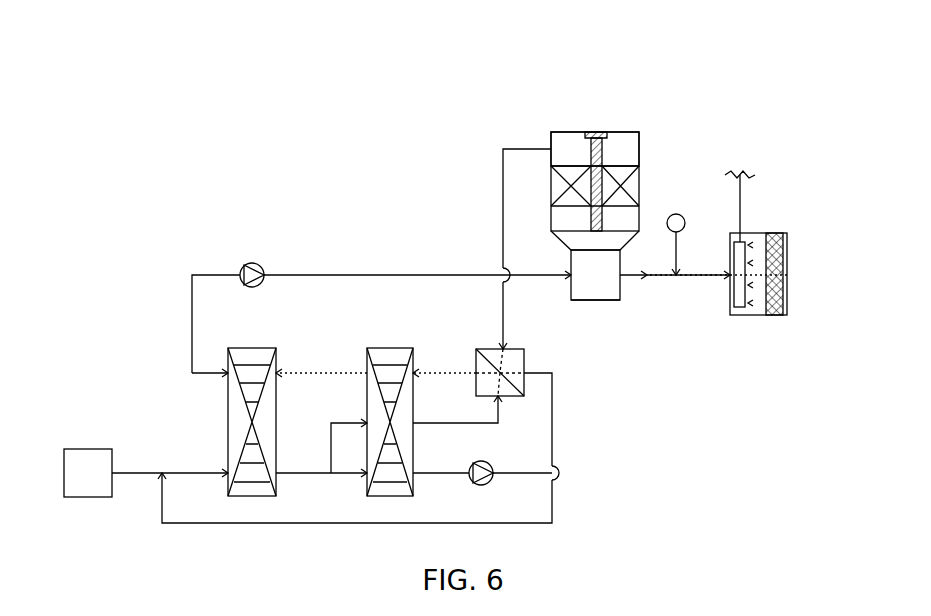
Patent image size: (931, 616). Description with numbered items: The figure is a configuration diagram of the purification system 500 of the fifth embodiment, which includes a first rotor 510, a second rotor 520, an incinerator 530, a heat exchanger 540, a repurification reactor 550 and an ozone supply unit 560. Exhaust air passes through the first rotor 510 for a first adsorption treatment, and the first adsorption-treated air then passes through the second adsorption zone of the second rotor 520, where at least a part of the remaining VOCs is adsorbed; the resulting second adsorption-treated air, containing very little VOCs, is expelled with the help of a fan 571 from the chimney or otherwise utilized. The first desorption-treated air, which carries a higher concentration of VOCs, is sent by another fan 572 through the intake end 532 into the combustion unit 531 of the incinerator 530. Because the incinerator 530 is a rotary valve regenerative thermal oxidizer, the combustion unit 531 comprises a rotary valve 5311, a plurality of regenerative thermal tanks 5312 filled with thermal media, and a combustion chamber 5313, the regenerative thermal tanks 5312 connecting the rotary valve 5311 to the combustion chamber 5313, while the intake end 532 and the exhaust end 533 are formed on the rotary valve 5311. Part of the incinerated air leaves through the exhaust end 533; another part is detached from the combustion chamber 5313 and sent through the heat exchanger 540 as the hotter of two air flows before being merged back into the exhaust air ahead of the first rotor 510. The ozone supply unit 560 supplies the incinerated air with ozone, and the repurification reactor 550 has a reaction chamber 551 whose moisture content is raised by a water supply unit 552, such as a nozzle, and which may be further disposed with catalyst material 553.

The purification system 500 is at (156, 94).
The first rotor 510 is at (276, 393).
The second rotor 520 is at (413, 430).
The incinerator 530 is at (672, 189).
The combustion unit 531 is at (742, 80).
The rotary valve 5311 is at (615, 267).
The regenerative thermal tanks 5312 is at (618, 173).
The combustion chamber 5313 is at (618, 133).
The intake end 532 is at (571, 277).
The exhaust end 533 is at (620, 278).
The heat exchanger 540 is at (490, 350).
The repurification reactor 550 is at (780, 252).
The reaction chamber 551 is at (758, 306).
The water supply unit 552 is at (740, 306).
The catalyst material 553 is at (775, 315).
The ozone supply unit 560 is at (676, 214).
The fan 571 is at (490, 464).
The fan 572 is at (252, 262).